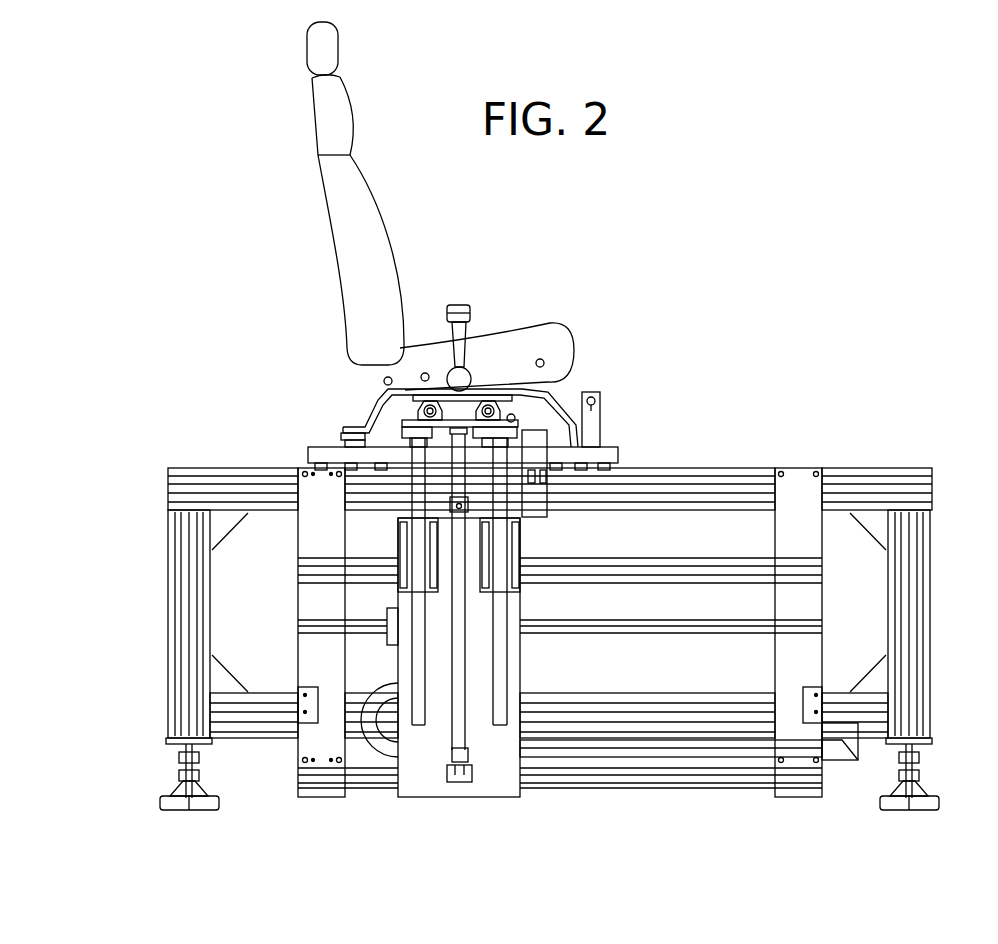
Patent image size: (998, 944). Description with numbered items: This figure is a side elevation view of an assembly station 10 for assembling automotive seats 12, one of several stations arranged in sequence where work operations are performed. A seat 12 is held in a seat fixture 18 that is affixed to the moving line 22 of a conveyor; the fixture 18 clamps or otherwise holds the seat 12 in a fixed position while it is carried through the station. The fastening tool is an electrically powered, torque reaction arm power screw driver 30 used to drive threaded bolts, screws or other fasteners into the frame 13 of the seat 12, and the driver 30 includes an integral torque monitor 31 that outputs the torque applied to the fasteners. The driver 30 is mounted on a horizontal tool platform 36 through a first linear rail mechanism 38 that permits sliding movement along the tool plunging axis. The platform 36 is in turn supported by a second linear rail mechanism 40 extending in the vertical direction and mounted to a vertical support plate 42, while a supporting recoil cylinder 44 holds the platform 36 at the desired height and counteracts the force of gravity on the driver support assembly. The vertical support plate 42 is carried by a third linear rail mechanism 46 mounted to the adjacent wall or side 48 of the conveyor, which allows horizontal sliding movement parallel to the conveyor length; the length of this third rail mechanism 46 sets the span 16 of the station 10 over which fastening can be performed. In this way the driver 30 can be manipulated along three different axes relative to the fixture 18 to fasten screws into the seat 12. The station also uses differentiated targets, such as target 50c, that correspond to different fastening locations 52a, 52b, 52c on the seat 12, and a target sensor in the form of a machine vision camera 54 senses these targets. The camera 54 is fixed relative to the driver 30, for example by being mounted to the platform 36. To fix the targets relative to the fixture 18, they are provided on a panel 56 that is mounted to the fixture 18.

The assembly station 10 is at (838, 205).
The automotive seat 12 is at (338, 183).
The frame 13 is at (377, 405).
The span 16 is at (295, 805).
The seat fixture 18 is at (608, 455).
The moving line 22 is at (870, 462).
The power screw driver 30 is at (462, 300).
The torque monitor 31 is at (438, 394).
The horizontal tool platform 36 is at (373, 418).
The first linear rail mechanism 38 is at (489, 400).
The second linear rail mechanism 40 is at (418, 588).
The vertical support plate 42 is at (427, 770).
The supporting recoil cylinder 44 is at (465, 740).
The third linear rail mechanism 46 is at (318, 580).
The side of the conveyor 48 is at (925, 491).
The differentiated target 50c is at (592, 397).
The fastening location 52a is at (384, 380).
The fastening location 52b is at (421, 375).
The fastening location 52c is at (541, 359).
The machine vision camera 54 is at (515, 415).
The panel 56 is at (597, 420).